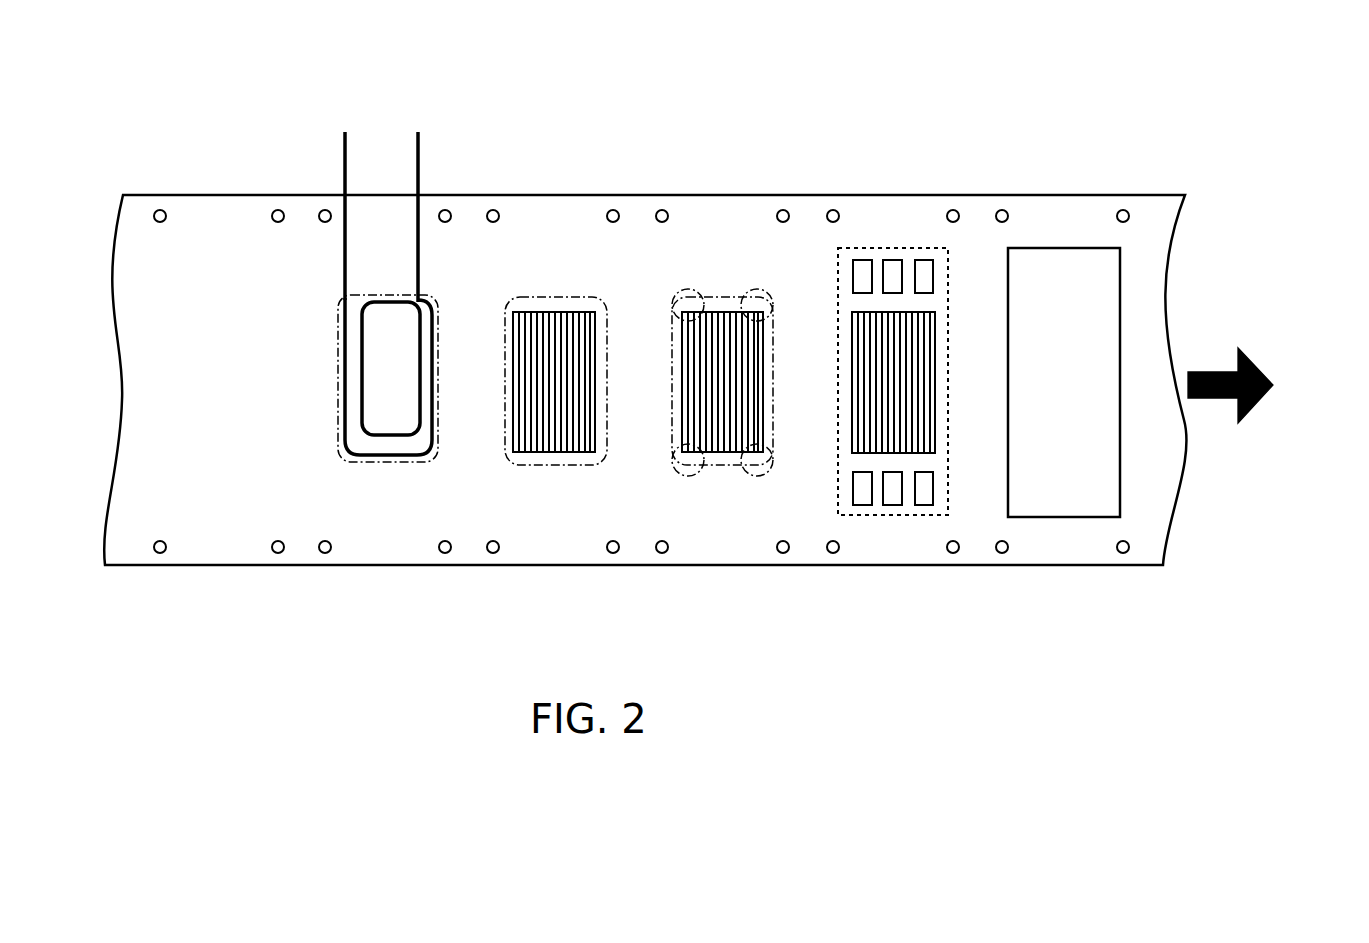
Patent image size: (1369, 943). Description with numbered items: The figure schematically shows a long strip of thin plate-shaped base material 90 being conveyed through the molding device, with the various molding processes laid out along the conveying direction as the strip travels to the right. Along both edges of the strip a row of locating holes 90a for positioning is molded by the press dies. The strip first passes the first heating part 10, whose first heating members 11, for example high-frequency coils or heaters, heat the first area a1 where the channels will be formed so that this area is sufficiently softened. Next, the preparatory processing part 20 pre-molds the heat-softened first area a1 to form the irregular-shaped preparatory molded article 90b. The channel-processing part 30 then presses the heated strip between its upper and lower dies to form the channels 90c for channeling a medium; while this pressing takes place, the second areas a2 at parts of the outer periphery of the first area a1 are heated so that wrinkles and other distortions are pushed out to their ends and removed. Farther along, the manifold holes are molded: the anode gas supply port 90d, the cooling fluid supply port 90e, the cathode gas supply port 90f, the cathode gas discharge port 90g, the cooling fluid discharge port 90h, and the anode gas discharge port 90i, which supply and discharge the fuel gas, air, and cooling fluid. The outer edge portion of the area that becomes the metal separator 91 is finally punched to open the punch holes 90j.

The thin plate-shaped base material 90 is at (125, 37).
The locating holes 90a is at (160, 209).
The first heating part 10 is at (326, 278).
The first heating members 11 is at (347, 156).
The preparatory processing part 20 is at (490, 278).
The channel-processing part 30 is at (659, 278).
The first area a1 is at (437, 378).
The second areas a2 is at (690, 290).
The preparatory molded article 90b is at (543, 403).
The channels 90c is at (710, 403).
The anode gas supply port 90d is at (862, 495).
The cooling fluid supply port 90e is at (892, 495).
The cathode gas supply port 90f is at (925, 495).
The cathode gas discharge port 90g is at (862, 272).
The cooling fluid discharge port 90h is at (891, 272).
The anode gas discharge port 90i is at (925, 270).
The punch holes 90j is at (1062, 248).
The metal separator 91 is at (943, 248).